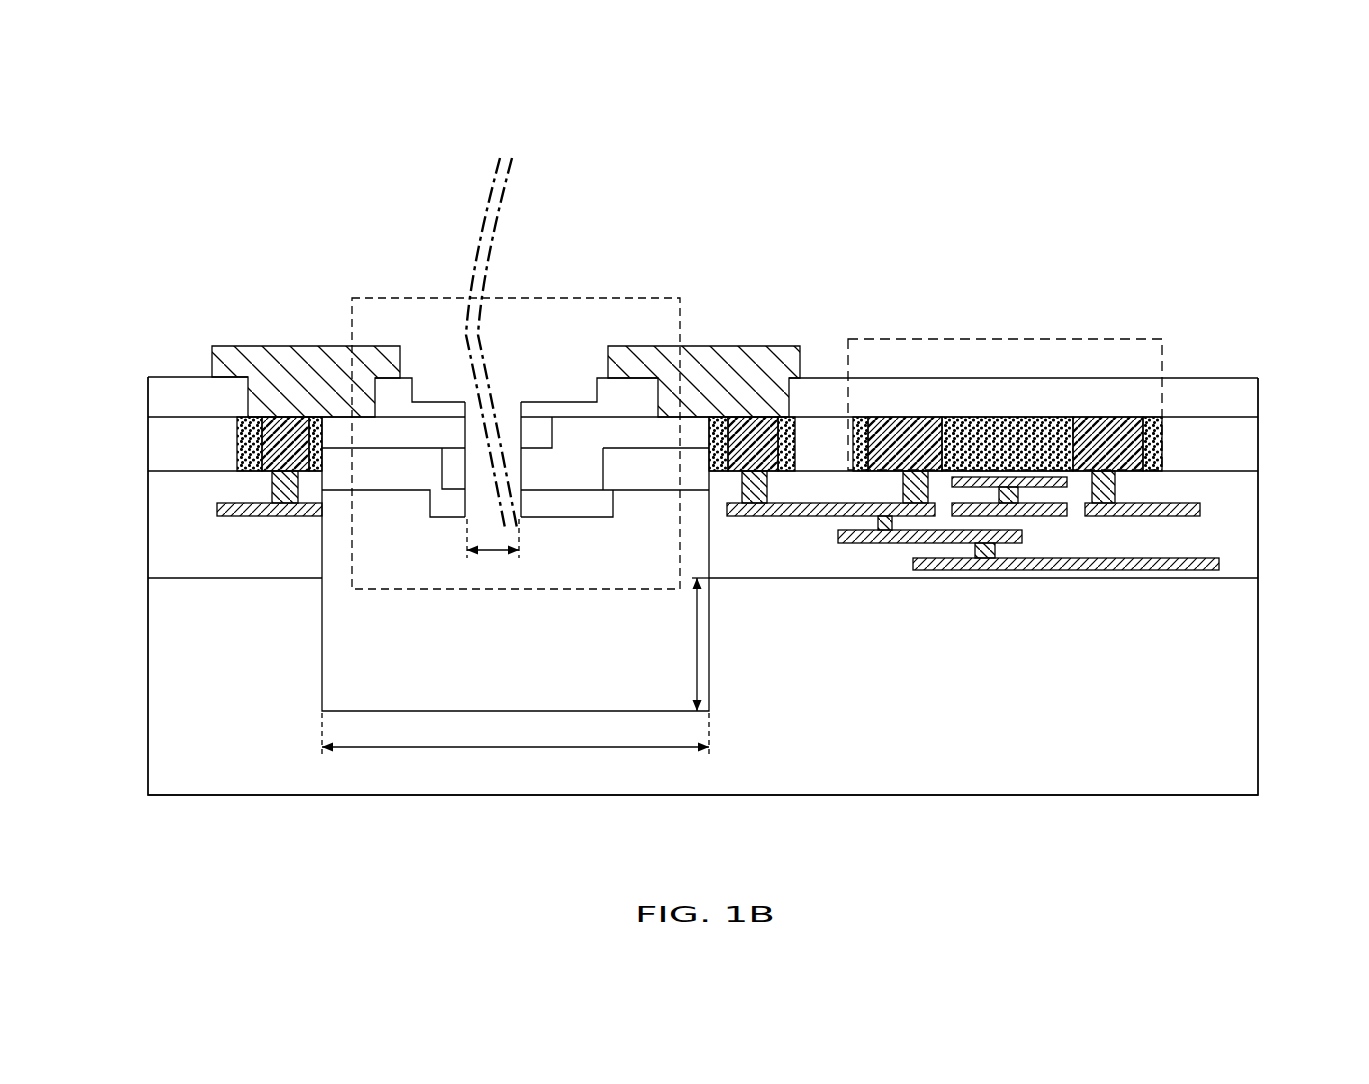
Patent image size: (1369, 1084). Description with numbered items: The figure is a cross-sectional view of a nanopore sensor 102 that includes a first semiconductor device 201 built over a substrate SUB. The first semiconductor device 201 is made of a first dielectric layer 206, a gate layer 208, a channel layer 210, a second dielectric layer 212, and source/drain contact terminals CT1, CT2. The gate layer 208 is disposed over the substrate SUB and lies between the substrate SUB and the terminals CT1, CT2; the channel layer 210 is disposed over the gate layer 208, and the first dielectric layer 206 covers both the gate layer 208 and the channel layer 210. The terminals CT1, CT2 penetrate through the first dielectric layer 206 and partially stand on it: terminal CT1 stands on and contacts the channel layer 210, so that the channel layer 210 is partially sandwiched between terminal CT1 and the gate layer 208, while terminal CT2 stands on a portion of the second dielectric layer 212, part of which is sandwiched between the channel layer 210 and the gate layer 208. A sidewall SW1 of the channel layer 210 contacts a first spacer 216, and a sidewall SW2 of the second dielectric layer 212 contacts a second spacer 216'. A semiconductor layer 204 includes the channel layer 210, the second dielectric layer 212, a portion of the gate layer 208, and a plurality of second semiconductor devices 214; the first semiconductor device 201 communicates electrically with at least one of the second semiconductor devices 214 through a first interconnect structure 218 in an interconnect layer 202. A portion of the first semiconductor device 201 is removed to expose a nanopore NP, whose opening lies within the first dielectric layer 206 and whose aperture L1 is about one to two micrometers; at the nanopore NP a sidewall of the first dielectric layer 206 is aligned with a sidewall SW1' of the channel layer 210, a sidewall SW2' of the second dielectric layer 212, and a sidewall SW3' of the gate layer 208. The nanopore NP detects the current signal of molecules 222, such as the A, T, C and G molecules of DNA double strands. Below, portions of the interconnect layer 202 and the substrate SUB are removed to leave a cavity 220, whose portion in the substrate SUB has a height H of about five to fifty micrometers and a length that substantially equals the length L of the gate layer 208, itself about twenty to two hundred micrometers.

The sensor 102 is at (153, 137).
The first semiconductor device 201 is at (535, 593).
The interconnect layer 202 is at (165, 555).
The semiconductor layer 204 is at (165, 452).
The first dielectric layer 206 is at (165, 401).
The gate layer 208 is at (572, 503).
The channel layer 210 is at (395, 437).
The second dielectric layer 212 is at (623, 436).
The second semiconductor devices 214 is at (1089, 338).
The first spacer 216 is at (269, 404).
The second spacer 216' is at (752, 397).
The first interconnect structure 218 is at (887, 503).
The cavity 220 is at (1275, 492).
The molecules 222 is at (512, 137).
The source/drain contact terminal CT1 is at (233, 338).
The source/drain contact terminal CT2 is at (633, 338).
The sidewall of the channel layer SW1 is at (321, 337).
The sidewall of the channel layer SW1' is at (435, 335).
The sidewall of the second dielectric layer SW2 is at (705, 335).
The sidewall of the second dielectric layer SW2' is at (415, 503).
The sidewall of the gate layer SW3' is at (433, 539).
The nanopore NP is at (508, 395).
The length of the gate layer L is at (515, 747).
The aperture of the nanopore L1 is at (493, 552).
The height of the cavity H is at (691, 644).
The substrate SUB is at (703, 586).